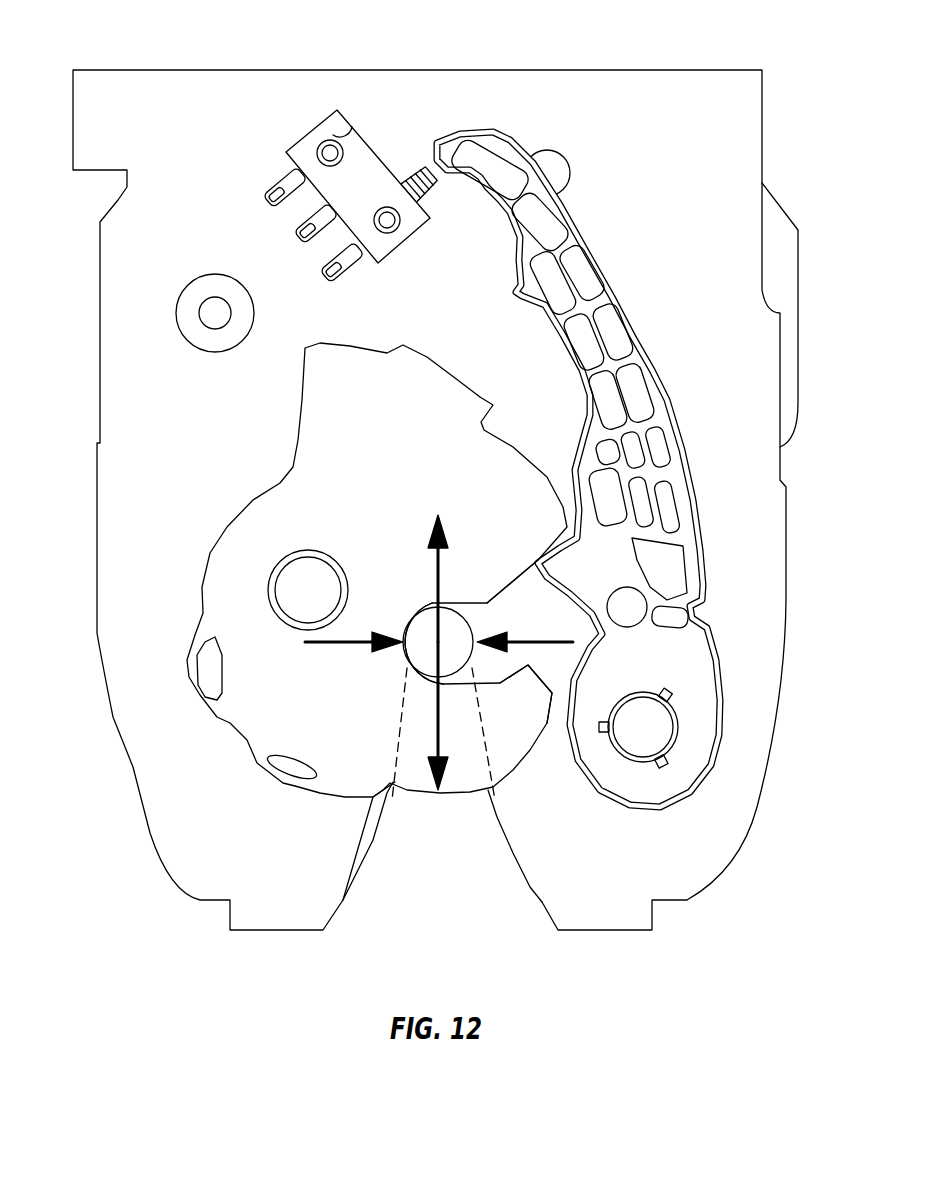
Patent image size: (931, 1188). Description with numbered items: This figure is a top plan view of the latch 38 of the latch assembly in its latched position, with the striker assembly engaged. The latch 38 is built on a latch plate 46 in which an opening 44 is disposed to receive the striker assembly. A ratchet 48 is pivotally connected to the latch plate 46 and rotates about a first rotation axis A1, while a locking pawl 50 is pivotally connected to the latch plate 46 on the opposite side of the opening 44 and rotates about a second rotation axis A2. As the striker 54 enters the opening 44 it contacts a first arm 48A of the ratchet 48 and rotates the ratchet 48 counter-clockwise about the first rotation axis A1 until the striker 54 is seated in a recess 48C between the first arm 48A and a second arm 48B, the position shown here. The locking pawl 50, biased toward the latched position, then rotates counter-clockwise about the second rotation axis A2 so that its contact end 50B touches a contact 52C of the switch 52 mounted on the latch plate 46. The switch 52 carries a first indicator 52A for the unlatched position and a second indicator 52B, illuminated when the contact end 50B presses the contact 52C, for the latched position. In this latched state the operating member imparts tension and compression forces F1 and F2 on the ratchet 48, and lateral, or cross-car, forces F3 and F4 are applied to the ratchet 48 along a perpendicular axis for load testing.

The latch 38 is at (700, 64).
The latch plate 46 is at (187, 68).
The opening 44 is at (373, 843).
The switch 52 is at (305, 138).
The first indicator 52A is at (353, 147).
The second indicator 52B is at (393, 232).
The contact 52C is at (447, 192).
The locking pawl 50 is at (693, 533).
The contact end 50B is at (437, 157).
The second rotation axis A2 is at (643, 727).
The ratchet 48 is at (303, 423).
The first arm 48A is at (527, 570).
The second arm 48B is at (557, 697).
The recess 48C is at (397, 617).
The first rotation axis A1 is at (308, 590).
The striker 54 is at (463, 610).
The force F1 is at (433, 558).
The force F2 is at (430, 742).
The force F3 is at (337, 643).
The force F4 is at (520, 637).